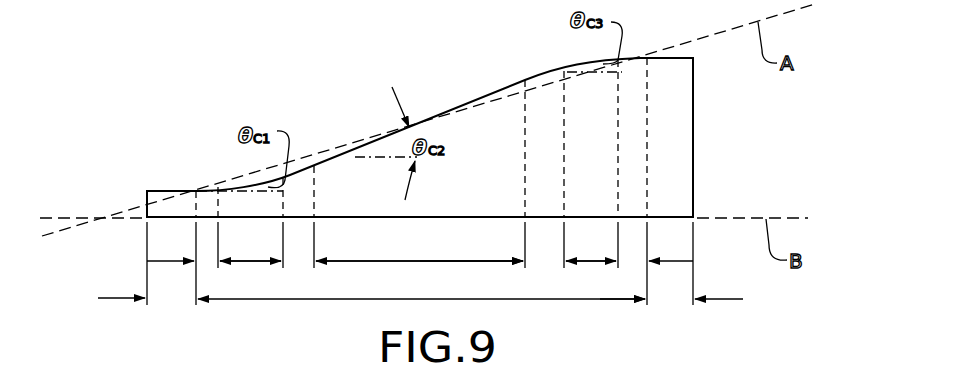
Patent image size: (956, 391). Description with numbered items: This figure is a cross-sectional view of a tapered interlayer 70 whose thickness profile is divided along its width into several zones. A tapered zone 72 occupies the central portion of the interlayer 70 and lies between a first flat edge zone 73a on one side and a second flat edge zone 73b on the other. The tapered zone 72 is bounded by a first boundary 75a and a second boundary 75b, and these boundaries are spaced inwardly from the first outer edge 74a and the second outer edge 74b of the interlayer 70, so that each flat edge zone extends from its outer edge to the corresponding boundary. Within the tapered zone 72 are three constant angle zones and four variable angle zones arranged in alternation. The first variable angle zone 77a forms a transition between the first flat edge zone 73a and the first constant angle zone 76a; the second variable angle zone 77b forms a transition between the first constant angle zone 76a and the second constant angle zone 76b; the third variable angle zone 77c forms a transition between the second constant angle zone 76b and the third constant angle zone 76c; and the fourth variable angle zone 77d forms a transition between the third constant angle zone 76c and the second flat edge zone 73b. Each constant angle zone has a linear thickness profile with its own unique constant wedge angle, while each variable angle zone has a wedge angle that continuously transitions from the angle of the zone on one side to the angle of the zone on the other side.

The interlayer 70 is at (232, 113).
The tapered zone 72 is at (421, 287).
The first flat edge zone 73a is at (142, 287).
The second flat edge zone 73b is at (671, 287).
The first outer edge 74a is at (147, 203).
The second outer edge 74b is at (693, 135).
The first boundary 75a is at (197, 204).
The second boundary 75b is at (647, 118).
The first constant angle zone 76a is at (250, 249).
The second constant angle zone 76b is at (419, 249).
The third constant angle zone 76c is at (591, 249).
The first variable angle zone 77a is at (206, 262).
The second variable angle zone 77b is at (300, 265).
The third variable angle zone 77c is at (543, 263).
The fourth variable angle zone 77d is at (631, 262).